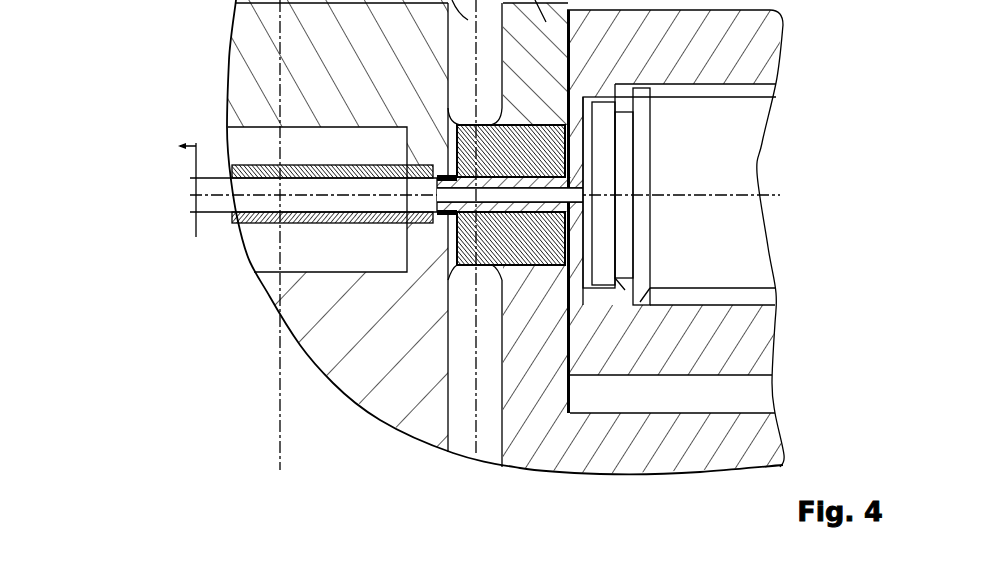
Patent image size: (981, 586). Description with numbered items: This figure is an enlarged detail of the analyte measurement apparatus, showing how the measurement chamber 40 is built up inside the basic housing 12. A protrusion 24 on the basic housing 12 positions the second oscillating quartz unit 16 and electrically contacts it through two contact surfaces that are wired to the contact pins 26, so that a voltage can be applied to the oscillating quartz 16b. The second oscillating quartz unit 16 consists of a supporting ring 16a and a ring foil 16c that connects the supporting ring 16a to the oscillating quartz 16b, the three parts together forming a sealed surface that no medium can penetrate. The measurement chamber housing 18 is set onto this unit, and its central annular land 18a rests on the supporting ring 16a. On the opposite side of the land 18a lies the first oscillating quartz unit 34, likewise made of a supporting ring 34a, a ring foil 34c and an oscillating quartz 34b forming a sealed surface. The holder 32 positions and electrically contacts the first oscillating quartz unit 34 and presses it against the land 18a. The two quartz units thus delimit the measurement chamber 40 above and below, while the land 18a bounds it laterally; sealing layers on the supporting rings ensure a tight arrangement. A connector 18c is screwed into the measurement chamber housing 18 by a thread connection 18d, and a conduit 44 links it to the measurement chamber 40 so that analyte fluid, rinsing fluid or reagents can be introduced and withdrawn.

The basic housing 12 is at (632, 450).
The second oscillating quartz unit 16 is at (240, 231).
The supporting ring 16a is at (450, 300).
The oscillating quartz 16b is at (433, 213).
The ring foil 16c is at (457, 265).
The measurement chamber housing 18 is at (745, 350).
The land 18a is at (407, 377).
The connector 18c is at (773, 85).
The thread connection 18d is at (735, 296).
The protrusion 24 is at (573, 397).
The contact pins 26 is at (477, 438).
The holder 32 is at (295, 33).
The first oscillating quartz unit 34 is at (288, 162).
The supporting ring 34a is at (448, 124).
The oscillating quartz 34b is at (238, 172).
The ring foil 34c is at (330, 126).
The measurement chamber 40 is at (298, 191).
The conduit 44 is at (420, 340).